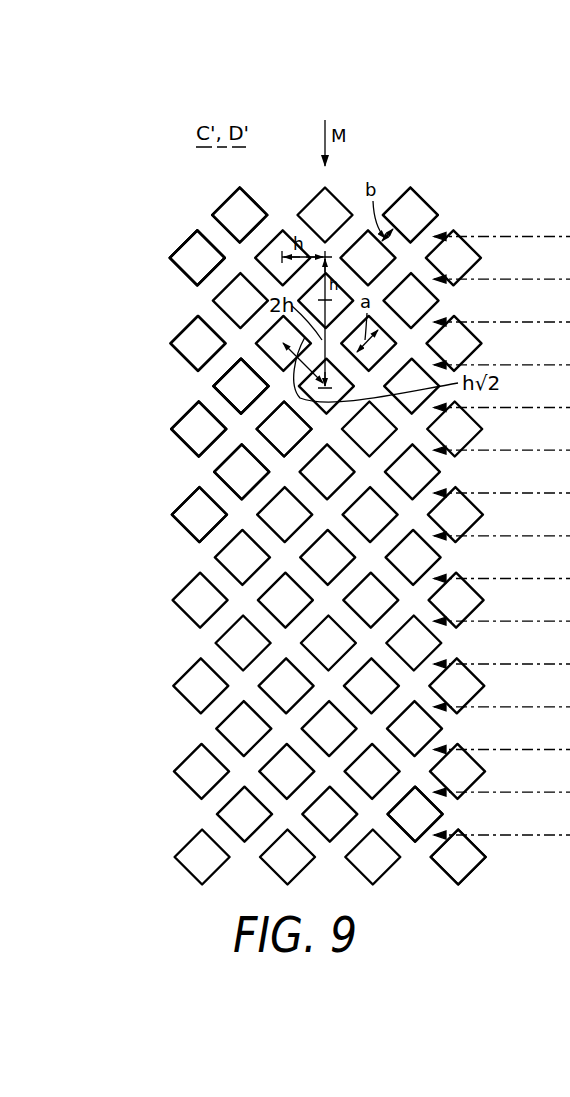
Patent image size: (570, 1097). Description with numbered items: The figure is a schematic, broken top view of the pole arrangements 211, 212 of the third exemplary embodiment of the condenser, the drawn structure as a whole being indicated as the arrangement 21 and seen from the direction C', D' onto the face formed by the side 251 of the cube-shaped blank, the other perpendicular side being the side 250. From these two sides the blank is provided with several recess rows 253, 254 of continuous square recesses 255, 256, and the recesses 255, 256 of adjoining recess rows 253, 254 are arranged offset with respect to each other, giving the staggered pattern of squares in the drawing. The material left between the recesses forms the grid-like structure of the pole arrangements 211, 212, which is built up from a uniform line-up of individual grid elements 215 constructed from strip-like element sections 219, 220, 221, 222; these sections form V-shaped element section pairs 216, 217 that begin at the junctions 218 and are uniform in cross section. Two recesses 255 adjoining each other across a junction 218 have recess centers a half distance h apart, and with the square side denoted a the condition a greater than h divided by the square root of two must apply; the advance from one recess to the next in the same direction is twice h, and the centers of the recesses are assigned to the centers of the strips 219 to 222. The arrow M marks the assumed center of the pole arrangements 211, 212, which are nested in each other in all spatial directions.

The seat pad 21 is at (470, 188).
The pole arrangement 211 is at (417, 865).
The pole arrangement 212 is at (458, 857).
The grid element 215 is at (190, 490).
The V-shaped element section pair 216 is at (185, 390).
The V-shaped element section pair 217 is at (190, 470).
The junction 218 is at (243, 445).
The strip-like element section 219 is at (213, 407).
The strip-like element section 220 is at (260, 405).
The strip-like element section 221 is at (207, 447).
The strip-like element section 222 is at (275, 452).
The side 250 is at (438, 160).
The side 251 is at (180, 325).
The recess row 253 is at (181, 234).
The recess row 254 is at (216, 201).
The recess 255 is at (183, 267).
The recess 256 is at (254, 207).